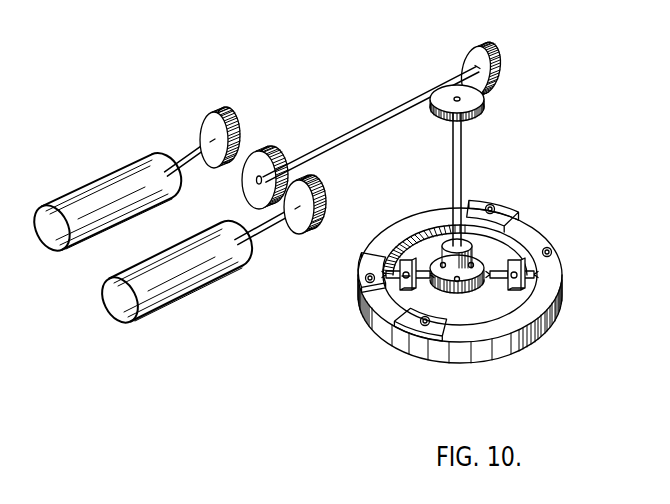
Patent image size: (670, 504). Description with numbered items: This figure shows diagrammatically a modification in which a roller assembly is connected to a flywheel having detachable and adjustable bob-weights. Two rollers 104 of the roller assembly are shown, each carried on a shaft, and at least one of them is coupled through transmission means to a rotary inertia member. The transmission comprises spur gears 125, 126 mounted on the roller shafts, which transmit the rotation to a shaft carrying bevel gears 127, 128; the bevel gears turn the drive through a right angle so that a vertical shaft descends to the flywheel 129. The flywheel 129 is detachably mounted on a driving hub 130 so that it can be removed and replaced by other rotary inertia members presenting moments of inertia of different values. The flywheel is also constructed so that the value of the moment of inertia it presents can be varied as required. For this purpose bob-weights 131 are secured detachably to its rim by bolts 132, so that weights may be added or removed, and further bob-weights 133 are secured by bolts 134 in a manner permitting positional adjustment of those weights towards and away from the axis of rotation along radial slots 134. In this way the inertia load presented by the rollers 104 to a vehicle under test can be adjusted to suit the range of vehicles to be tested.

The roller 104 is at (105, 180).
The spur gear 125 is at (209, 128).
The spur gear 126 is at (258, 168).
The bevel gear 127 is at (496, 59).
The bevel gear 128 is at (472, 102).
The flywheel 129 is at (582, 297).
The driving hub 130 is at (462, 290).
The bob-weight 131 is at (528, 221).
The bolt 132 is at (495, 207).
The bob-weight 133 is at (362, 322).
The bolt 134 is at (360, 262).